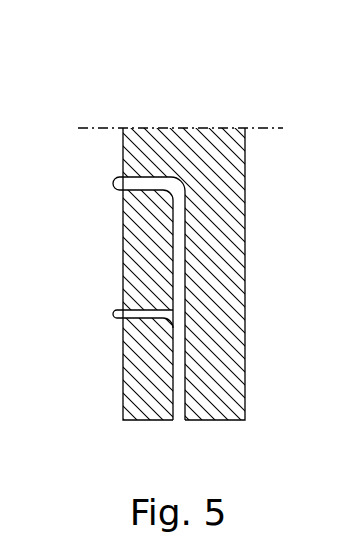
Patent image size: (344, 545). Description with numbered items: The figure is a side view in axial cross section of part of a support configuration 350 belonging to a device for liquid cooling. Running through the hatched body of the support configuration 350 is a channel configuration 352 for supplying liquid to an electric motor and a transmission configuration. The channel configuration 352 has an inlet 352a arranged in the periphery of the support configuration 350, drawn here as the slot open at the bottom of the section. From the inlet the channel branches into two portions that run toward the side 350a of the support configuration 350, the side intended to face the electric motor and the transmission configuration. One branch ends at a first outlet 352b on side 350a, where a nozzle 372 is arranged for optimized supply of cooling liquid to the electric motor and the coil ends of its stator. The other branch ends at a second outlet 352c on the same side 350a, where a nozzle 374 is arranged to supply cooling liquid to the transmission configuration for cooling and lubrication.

The support configuration 350 is at (205, 80).
The side of the support configuration 350a is at (122, 389).
The channel configuration 352 is at (190, 343).
The inlet 352a is at (173, 420).
The first outlet 352b is at (122, 320).
The second outlet 352c is at (122, 193).
The nozzle 372 is at (117, 316).
The nozzle 374 is at (117, 183).